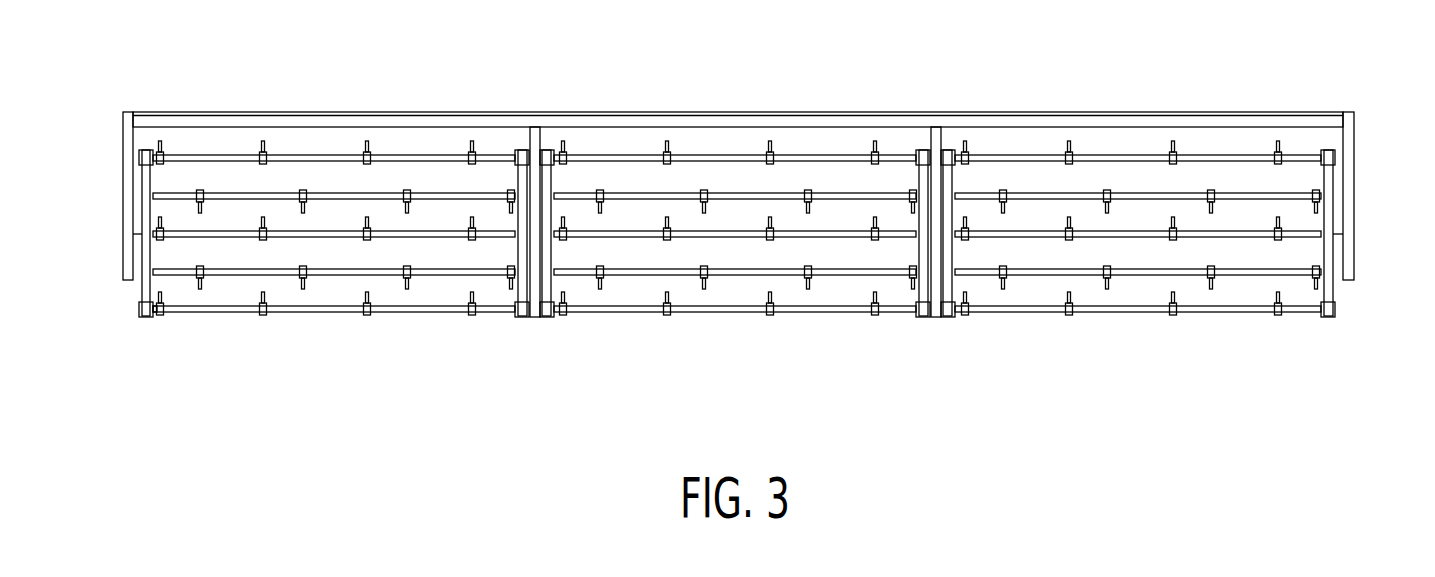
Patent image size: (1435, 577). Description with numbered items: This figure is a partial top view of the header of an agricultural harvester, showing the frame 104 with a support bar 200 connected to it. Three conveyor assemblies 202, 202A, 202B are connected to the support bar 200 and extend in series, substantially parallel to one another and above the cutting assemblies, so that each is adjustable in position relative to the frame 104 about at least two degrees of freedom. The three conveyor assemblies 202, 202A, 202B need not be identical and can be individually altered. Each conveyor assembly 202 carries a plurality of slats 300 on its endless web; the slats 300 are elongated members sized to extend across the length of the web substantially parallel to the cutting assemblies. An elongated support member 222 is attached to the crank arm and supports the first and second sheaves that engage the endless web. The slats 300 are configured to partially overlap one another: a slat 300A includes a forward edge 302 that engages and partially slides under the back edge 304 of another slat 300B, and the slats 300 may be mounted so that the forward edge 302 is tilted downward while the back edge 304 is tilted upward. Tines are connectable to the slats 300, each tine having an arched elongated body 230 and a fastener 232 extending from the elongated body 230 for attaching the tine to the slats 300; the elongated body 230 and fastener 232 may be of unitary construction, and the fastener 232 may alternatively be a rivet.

The frame 104 is at (514, 112).
The support bar 200 is at (122, 141).
The conveyor assembly 202 is at (321, 345).
The conveyor assembly 202A is at (735, 319).
The conveyor assembly 202B is at (1138, 319).
The elongated support member 222 is at (140, 298).
The elongated body 230 is at (158, 322).
The fastener 232 is at (167, 315).
The slats 300 is at (697, 350).
The slat 300A is at (737, 105).
The slat 300B is at (737, 125).
The forward edge 302 is at (212, 161).
The back edge 304 is at (237, 193).